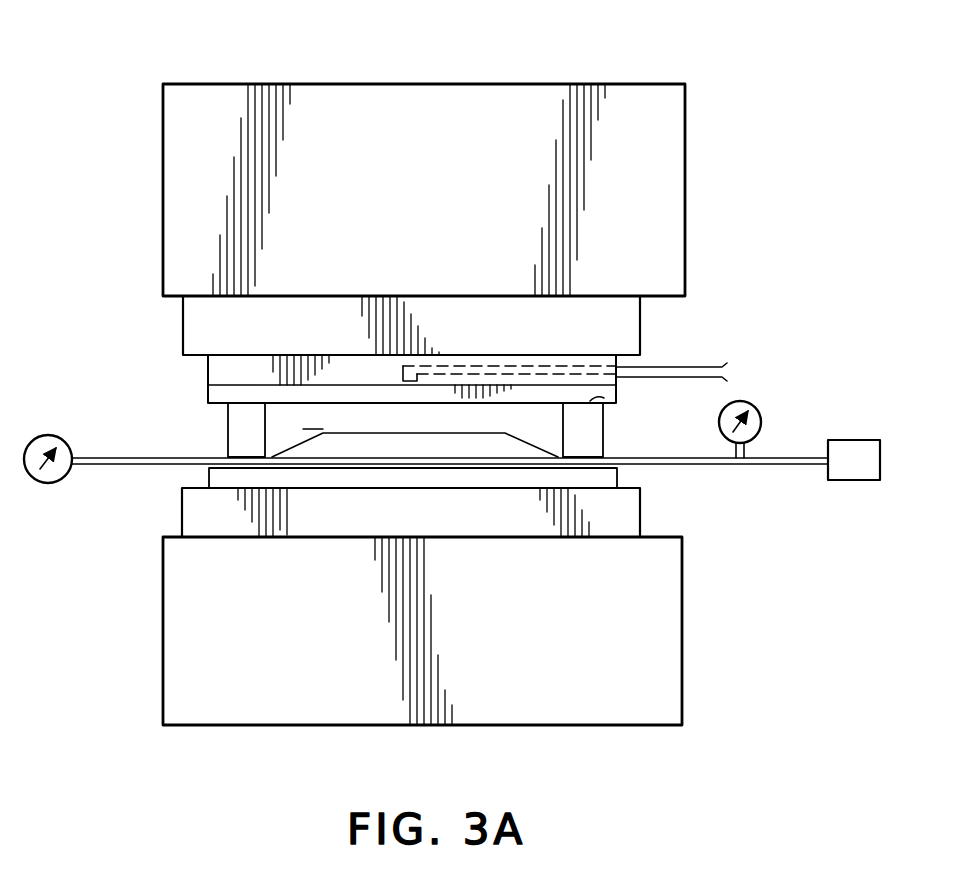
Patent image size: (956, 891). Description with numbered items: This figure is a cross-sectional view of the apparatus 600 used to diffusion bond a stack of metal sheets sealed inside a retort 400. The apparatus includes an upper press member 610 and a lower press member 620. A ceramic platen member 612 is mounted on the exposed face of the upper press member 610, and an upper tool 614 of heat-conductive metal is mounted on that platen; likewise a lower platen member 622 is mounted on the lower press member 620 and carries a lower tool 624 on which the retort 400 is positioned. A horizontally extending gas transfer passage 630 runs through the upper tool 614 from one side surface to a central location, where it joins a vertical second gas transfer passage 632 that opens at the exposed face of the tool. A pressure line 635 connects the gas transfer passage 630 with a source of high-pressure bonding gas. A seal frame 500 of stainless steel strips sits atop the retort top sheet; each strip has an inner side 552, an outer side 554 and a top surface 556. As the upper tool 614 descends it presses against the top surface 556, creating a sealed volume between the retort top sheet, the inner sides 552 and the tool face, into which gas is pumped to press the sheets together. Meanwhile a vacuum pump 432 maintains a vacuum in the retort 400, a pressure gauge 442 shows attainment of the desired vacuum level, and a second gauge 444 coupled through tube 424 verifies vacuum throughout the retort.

The apparatus 600 is at (651, 30).
The upper press member 610 is at (168, 157).
The platen member 612 is at (190, 330).
The upper tool 614 is at (213, 368).
The gas transfer passage 630 is at (563, 366).
The second gas transfer passage 632 is at (400, 368).
The pressure line 635 is at (683, 367).
The seal frame 500 is at (222, 430).
The inner side 552 is at (560, 437).
The outer side 554 is at (605, 444).
The top surface 556 is at (597, 396).
The tube 424 is at (145, 465).
The second gauge 444 is at (52, 483).
The pressure gauge 442 is at (745, 400).
The retort 400 is at (768, 436).
The vacuum pump 432 is at (856, 481).
The lower tool 624 is at (617, 475).
The lower platen member 622 is at (640, 523).
The lower press member 620 is at (668, 656).